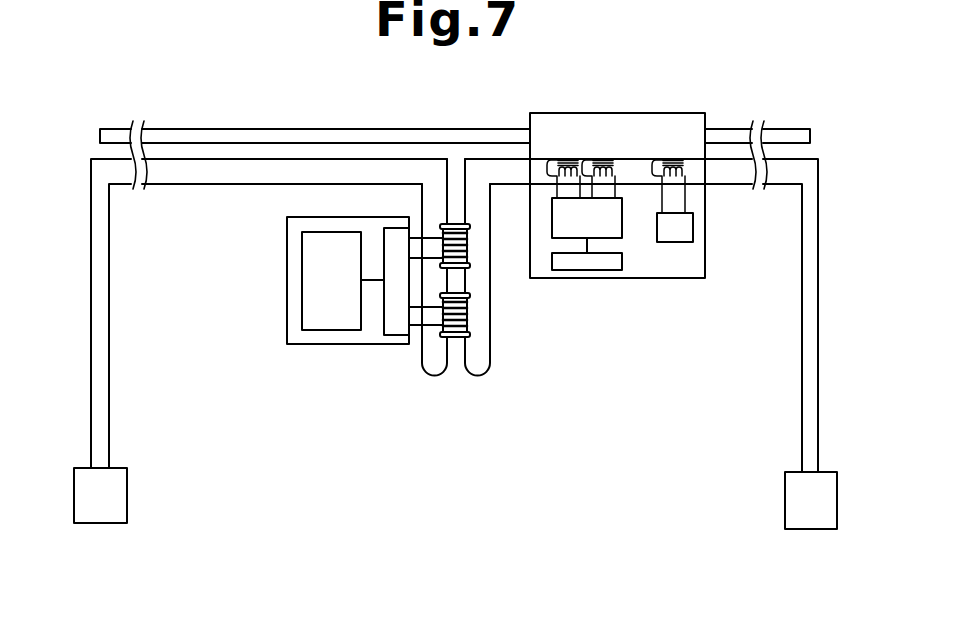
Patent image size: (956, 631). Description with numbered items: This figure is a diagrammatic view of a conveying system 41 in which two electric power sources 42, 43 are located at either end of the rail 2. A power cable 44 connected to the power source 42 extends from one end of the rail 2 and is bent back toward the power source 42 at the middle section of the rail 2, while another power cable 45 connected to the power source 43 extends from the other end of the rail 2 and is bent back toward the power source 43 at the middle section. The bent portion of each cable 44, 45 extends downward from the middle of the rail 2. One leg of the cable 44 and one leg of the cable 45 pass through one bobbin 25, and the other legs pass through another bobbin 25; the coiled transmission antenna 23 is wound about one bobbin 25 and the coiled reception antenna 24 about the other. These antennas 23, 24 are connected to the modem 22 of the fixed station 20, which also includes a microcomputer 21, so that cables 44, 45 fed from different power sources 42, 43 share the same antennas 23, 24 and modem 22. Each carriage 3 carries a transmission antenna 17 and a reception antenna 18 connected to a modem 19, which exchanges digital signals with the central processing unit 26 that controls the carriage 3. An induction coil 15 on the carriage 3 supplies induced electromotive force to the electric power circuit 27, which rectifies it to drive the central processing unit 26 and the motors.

The rail 2 is at (323, 128).
The carriage 3 is at (584, 112).
The induction coil 15 is at (680, 158).
The transmission antenna 17 is at (618, 158).
The reception antenna 18 is at (553, 158).
The modem 19 is at (573, 232).
The fixed station 20 is at (287, 296).
The microcomputer 21 is at (318, 286).
The modem 22 is at (396, 346).
The transmission antenna 23 is at (468, 255).
The reception antenna 24 is at (468, 324).
The bobbin 25 is at (470, 294).
The central processing unit 26 is at (622, 262).
The electric power circuit 27 is at (672, 243).
The conveying system 41 is at (578, 395).
The electric power source 42 is at (128, 490).
The electric power source 43 is at (785, 497).
The power cable 44 is at (207, 186).
The power cable 45 is at (733, 188).